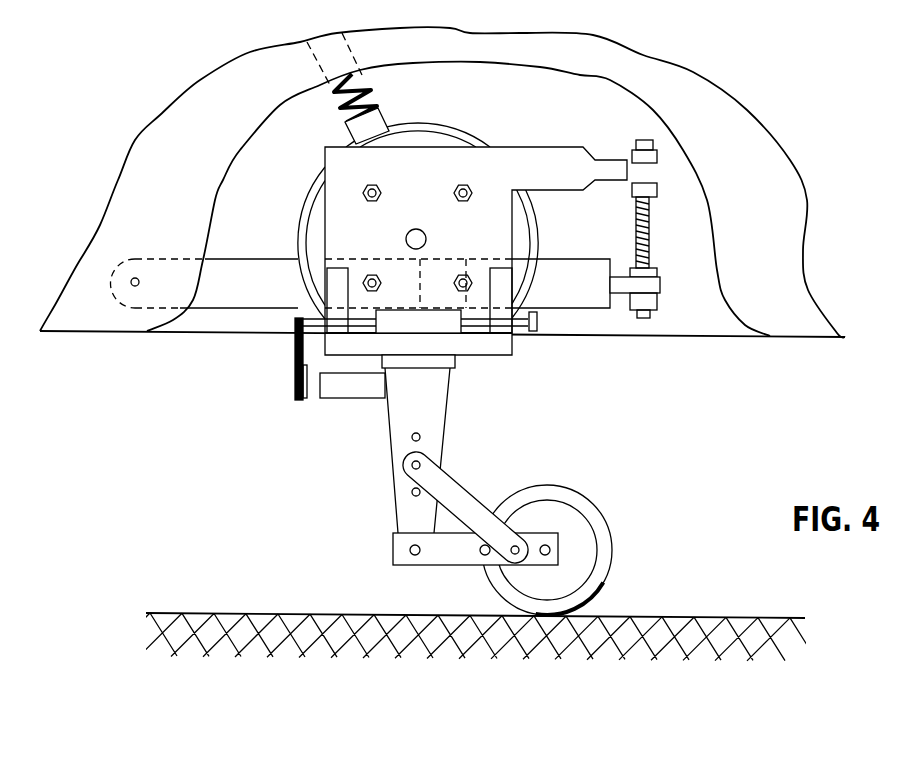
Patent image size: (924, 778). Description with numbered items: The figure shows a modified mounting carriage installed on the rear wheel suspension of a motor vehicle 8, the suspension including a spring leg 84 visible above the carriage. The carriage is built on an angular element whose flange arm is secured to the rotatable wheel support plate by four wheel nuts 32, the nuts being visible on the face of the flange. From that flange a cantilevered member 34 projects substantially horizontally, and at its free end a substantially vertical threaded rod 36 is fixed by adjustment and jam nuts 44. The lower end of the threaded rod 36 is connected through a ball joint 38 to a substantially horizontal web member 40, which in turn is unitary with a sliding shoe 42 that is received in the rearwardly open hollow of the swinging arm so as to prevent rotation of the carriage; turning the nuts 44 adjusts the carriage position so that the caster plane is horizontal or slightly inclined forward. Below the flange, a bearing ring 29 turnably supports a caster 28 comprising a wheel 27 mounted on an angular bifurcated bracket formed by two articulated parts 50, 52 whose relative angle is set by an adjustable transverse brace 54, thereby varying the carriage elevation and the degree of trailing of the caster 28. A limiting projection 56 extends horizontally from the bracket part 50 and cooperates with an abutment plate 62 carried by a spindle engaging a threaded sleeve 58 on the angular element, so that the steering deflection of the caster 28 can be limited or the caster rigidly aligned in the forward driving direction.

The motor vehicle 8 is at (707, 84).
The wheel 27 is at (600, 537).
The caster 28 is at (588, 498).
The bearing ring 29 is at (445, 362).
The wheel nuts 32 is at (455, 187).
The cantilevered member 34 is at (544, 163).
The threaded rod 36 is at (648, 233).
The ball joint 38 is at (648, 275).
The web member 40 is at (655, 290).
The sliding shoe 42 is at (567, 278).
The adjustment and jam nuts 44 is at (655, 188).
The bracket part 50 is at (408, 415).
The bracket part 52 is at (452, 547).
The adjustable transverse braces 54 is at (465, 497).
The limiting projection 56 is at (350, 385).
The threaded sleeve 58 is at (402, 322).
The abutment plate 62 is at (295, 382).
The spring leg 84 is at (375, 122).